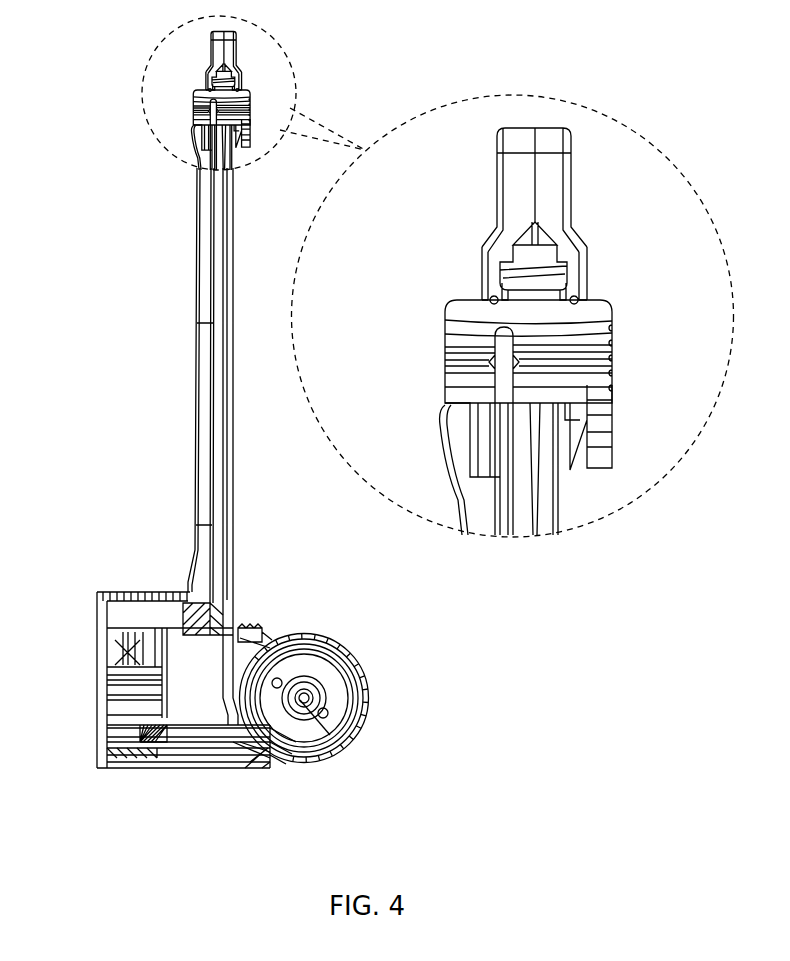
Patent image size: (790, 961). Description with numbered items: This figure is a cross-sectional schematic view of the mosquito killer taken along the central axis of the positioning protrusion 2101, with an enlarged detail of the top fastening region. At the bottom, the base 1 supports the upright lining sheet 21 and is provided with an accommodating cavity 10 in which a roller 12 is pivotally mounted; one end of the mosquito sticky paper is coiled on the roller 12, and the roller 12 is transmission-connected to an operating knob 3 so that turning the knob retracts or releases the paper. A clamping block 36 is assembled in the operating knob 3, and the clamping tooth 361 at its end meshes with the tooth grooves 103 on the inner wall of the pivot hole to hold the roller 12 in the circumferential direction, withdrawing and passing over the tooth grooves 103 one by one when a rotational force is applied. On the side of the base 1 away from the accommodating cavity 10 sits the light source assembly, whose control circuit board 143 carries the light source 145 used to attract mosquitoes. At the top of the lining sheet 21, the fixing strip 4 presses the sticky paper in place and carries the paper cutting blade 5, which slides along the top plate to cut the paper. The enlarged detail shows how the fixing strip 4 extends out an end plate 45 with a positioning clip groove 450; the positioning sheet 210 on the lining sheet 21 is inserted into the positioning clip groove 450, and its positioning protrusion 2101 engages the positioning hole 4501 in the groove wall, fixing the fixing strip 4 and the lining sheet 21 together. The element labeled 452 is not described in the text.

The base 1 is at (113, 588).
The operating knob 3 is at (330, 688).
The fixing strip 4 is at (462, 308).
The paper cutting blade 5 is at (548, 180).
The accommodating cavity 10 is at (248, 645).
The roller 12 is at (326, 698).
The lining sheet 21 is at (555, 510).
The clamping block 36 is at (332, 752).
The end plate 45 is at (575, 384).
The tooth grooves 103 is at (288, 762).
The control circuit board 143 is at (105, 695).
The light source 145 is at (158, 590).
The positioning sheet 210 is at (495, 365).
The clamping tooth 361 is at (274, 770).
The positioning clip groove 450 is at (465, 322).
The tube wall 452 is at (580, 262).
The positioning protrusion 2101 is at (478, 362).
The positioning hole 4501 is at (475, 347).